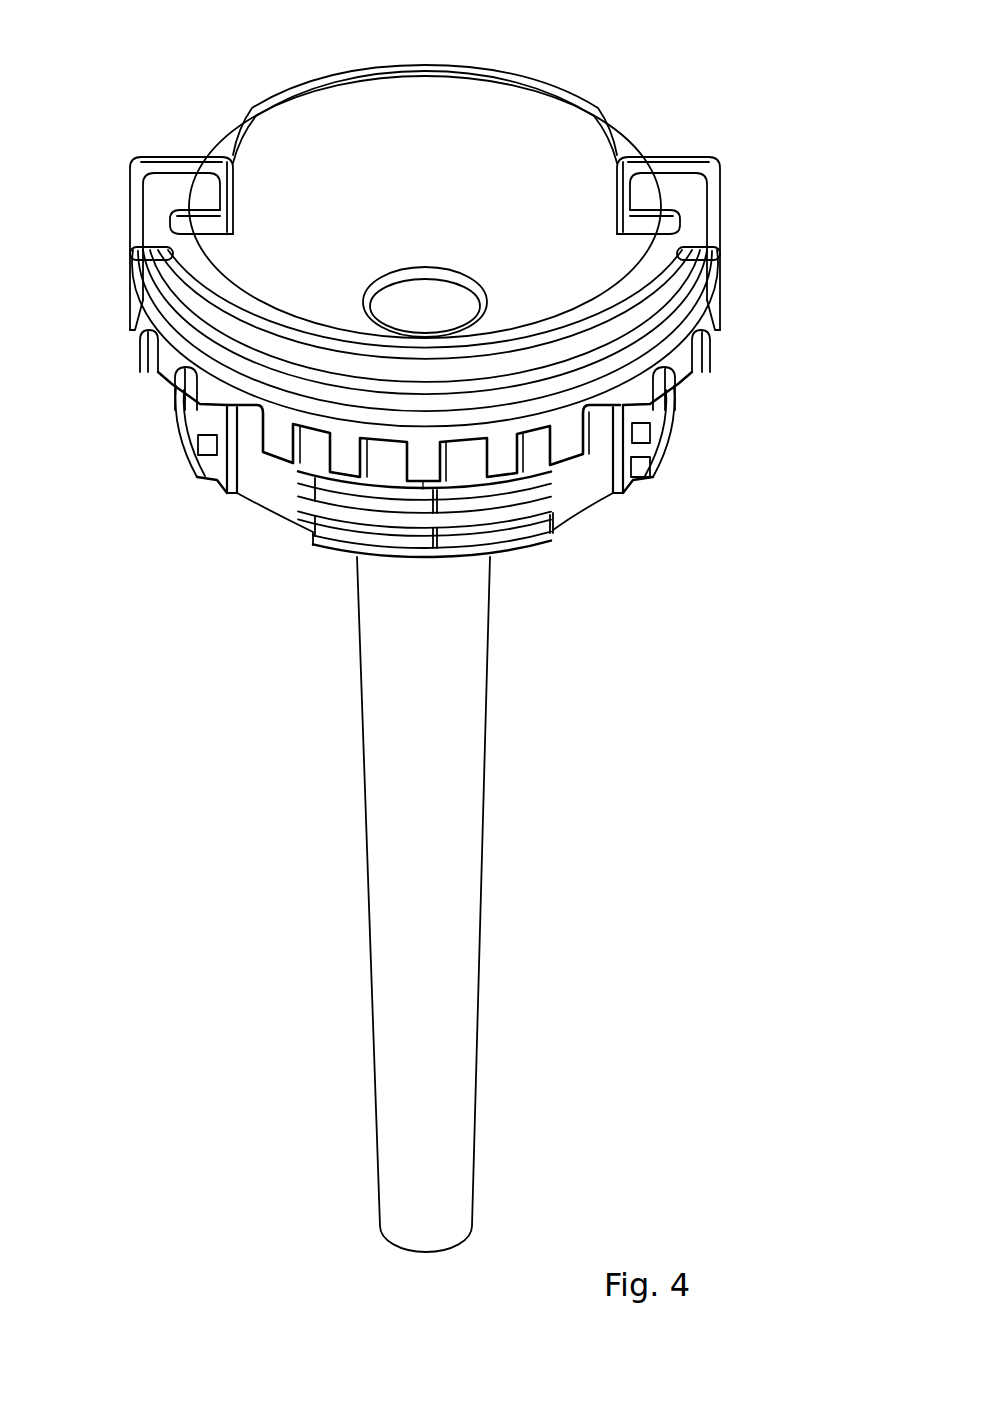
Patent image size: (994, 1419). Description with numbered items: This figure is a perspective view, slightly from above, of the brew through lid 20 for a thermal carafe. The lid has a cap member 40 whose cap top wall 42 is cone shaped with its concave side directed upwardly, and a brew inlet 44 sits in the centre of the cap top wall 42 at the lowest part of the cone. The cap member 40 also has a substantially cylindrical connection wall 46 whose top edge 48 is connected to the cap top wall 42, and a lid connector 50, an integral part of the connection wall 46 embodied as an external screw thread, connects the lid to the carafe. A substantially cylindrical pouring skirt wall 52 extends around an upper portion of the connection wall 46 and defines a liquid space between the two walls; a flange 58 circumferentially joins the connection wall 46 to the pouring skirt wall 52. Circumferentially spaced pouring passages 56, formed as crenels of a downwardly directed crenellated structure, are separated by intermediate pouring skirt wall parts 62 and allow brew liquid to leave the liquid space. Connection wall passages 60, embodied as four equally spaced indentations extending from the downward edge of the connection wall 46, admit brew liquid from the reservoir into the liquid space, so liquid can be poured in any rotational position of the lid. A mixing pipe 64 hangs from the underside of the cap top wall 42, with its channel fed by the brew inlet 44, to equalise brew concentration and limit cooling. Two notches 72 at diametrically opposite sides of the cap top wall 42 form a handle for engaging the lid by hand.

The brew through lid 20 is at (662, 81).
The cap member 40 is at (668, 120).
The cap top wall 42 is at (515, 170).
The brew inlet 44 is at (422, 297).
The connection wall 46 is at (543, 523).
The top edge 48 is at (620, 315).
The lid connector 50 is at (183, 453).
The pouring skirt wall 52 is at (568, 413).
The pouring passages 56 is at (320, 454).
The flange 58 is at (183, 318).
The connection wall passages 60 is at (290, 497).
The intermediate pouring skirt wall parts 62 is at (503, 458).
The mixing pipe 64 is at (443, 968).
The notches 72 is at (630, 477).